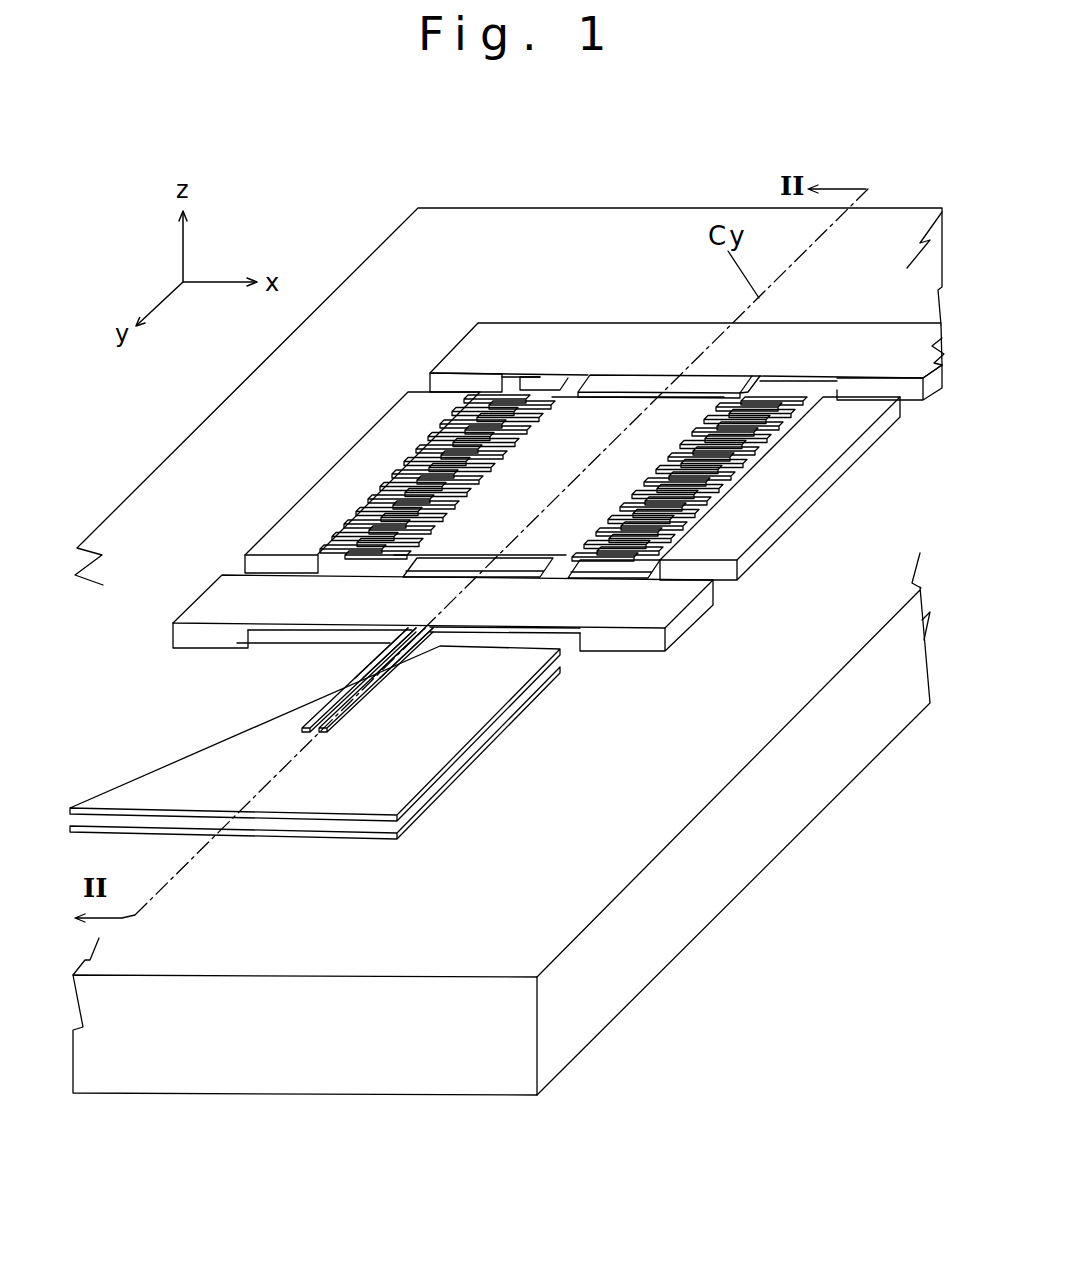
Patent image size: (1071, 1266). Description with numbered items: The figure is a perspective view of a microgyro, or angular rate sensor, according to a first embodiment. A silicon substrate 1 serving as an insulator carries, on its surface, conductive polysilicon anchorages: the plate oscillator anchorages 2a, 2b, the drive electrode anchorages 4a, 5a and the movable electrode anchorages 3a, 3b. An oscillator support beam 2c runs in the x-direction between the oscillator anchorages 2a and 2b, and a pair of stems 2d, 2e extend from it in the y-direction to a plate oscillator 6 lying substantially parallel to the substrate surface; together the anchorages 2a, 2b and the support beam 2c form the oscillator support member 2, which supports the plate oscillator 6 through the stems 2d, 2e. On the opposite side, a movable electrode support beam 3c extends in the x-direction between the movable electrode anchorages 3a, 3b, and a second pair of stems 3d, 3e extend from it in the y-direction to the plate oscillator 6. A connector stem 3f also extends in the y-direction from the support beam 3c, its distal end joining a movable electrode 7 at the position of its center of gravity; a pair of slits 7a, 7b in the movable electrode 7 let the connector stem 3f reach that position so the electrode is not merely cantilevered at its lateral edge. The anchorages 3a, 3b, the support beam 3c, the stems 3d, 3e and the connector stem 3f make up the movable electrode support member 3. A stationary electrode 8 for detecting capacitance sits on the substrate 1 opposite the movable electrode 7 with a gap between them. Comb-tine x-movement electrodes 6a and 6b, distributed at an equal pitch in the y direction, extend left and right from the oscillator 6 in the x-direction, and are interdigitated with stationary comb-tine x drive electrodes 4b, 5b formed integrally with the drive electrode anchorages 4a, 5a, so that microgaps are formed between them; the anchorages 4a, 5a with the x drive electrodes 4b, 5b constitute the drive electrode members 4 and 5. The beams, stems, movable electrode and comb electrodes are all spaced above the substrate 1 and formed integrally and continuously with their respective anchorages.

The silicon substrate 1 is at (563, 225).
The oscillator support member 2 is at (615, 334).
The plate oscillator anchorage 2a is at (437, 378).
The plate oscillator anchorage 2b is at (852, 383).
The oscillator support beam 2c is at (667, 347).
The stem 2d is at (581, 376).
The stem 2e is at (743, 377).
The movable electrode support member 3 is at (187, 590).
The movable electrode anchorage 3a is at (195, 633).
The movable electrode anchorage 3b is at (637, 645).
The movable electrode support beam 3c is at (533, 632).
The stem 3d is at (410, 570).
The stem 3e is at (565, 569).
The connector stem 3f is at (390, 678).
The drive electrode member 4 is at (368, 464).
The drive electrode anchorage 4a is at (307, 518).
The x drive electrode 4b is at (423, 462).
The drive electrode member 5 is at (762, 511).
The drive electrode anchorage 5a is at (763, 546).
The x drive electrode 5b is at (775, 437).
The plate oscillator 6 is at (570, 453).
The x-movement electrode 6a is at (452, 490).
The x-movement electrode 6b is at (625, 520).
The movable electrode 7 is at (246, 713).
The slit 7a is at (350, 692).
The slit 7b is at (350, 708).
The stationary electrode 8 is at (447, 800).